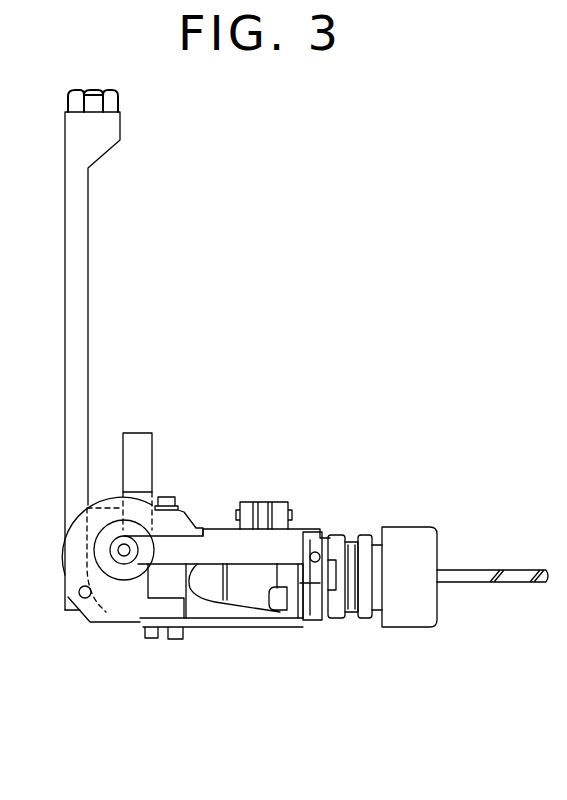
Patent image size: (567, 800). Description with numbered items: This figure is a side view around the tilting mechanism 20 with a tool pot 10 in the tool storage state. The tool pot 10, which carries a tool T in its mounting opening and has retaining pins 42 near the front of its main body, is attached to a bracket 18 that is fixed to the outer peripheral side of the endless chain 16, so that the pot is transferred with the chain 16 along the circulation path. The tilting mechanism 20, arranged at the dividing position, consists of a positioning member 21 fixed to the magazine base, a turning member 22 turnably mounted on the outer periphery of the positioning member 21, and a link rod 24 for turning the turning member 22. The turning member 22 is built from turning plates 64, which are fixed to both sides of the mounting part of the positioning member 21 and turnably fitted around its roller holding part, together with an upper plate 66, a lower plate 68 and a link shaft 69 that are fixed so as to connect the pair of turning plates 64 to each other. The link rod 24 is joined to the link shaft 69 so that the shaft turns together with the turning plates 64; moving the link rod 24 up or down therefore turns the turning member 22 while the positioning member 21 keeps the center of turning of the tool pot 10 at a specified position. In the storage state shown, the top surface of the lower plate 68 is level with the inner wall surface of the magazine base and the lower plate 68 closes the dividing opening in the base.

The link rod 24 is at (78, 237).
The tilting mechanism 20 is at (125, 347).
The positioning member 21 is at (137, 440).
The turning plates 64 is at (118, 610).
The link shaft 69 is at (79, 592).
The upper plate 66 is at (180, 503).
The bracket 18 is at (295, 547).
The endless chain 16 is at (248, 510).
The retaining pins 42 is at (320, 535).
The tool T is at (407, 615).
The tool pot 10 is at (307, 607).
The lower plate 68 is at (215, 628).
The turning member 22 is at (91, 628).